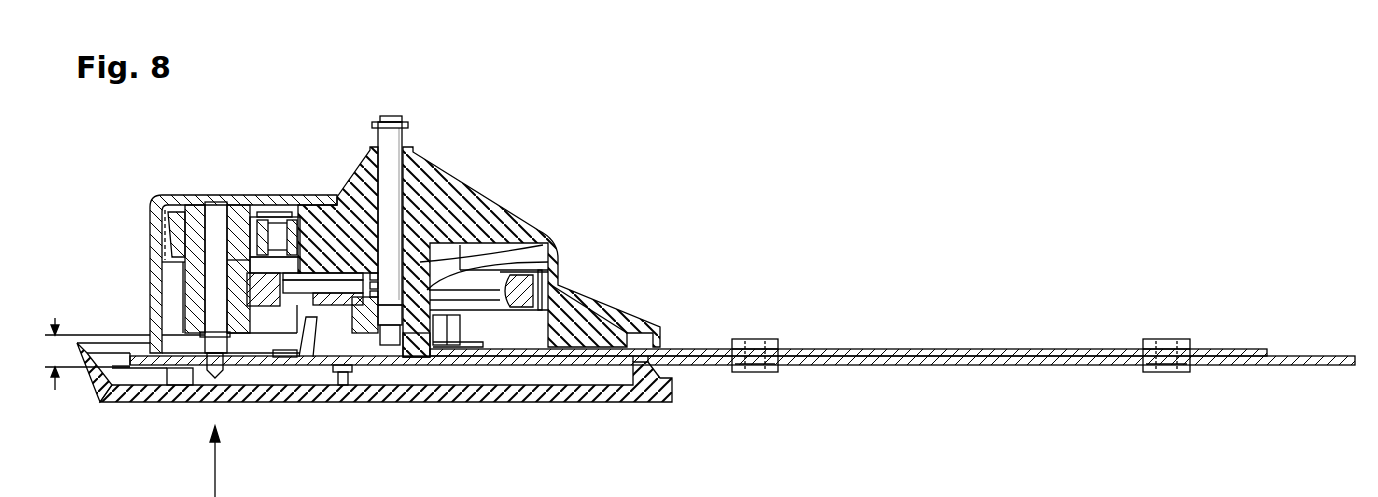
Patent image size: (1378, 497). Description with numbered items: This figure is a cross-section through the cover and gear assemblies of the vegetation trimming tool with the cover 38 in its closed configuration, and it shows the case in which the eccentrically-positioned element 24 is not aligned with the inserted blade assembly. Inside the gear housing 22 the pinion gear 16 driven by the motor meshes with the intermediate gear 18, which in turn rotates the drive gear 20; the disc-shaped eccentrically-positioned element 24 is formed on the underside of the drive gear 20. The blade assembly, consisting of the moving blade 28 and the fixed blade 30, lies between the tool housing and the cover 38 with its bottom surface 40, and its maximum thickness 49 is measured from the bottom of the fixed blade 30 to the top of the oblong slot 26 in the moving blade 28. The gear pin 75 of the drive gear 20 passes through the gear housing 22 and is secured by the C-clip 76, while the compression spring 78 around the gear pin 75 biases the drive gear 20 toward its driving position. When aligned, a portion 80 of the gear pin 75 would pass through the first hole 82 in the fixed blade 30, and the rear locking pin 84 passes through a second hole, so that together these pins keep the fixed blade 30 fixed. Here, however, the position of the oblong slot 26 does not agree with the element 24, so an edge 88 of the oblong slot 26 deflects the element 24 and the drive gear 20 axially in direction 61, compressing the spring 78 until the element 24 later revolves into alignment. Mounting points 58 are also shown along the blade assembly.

The pinion gear 16 is at (287, 215).
The intermediate gear 18 is at (165, 233).
The drive gear 20 is at (540, 282).
The gear housing 22 is at (450, 200).
The eccentrically-positioned element 24 is at (535, 272).
The oblong slot 26 is at (422, 348).
The moving blade 28 is at (922, 350).
The fixed blade 30 is at (928, 365).
The cover 38 is at (266, 402).
The bottom surface 40 is at (147, 403).
The maximum thickness 49 is at (57, 341).
The clamp 58 is at (756, 372).
The direction 61 is at (215, 470).
The gear pin 75 is at (397, 160).
The C-clip 76 is at (398, 116).
The compression spring 78 is at (497, 238).
The portion of gear pin 80 is at (386, 336).
The first hole 82 is at (385, 362).
The rear locking pin 84 is at (230, 213).
The edge of oblong slot 88 is at (314, 332).